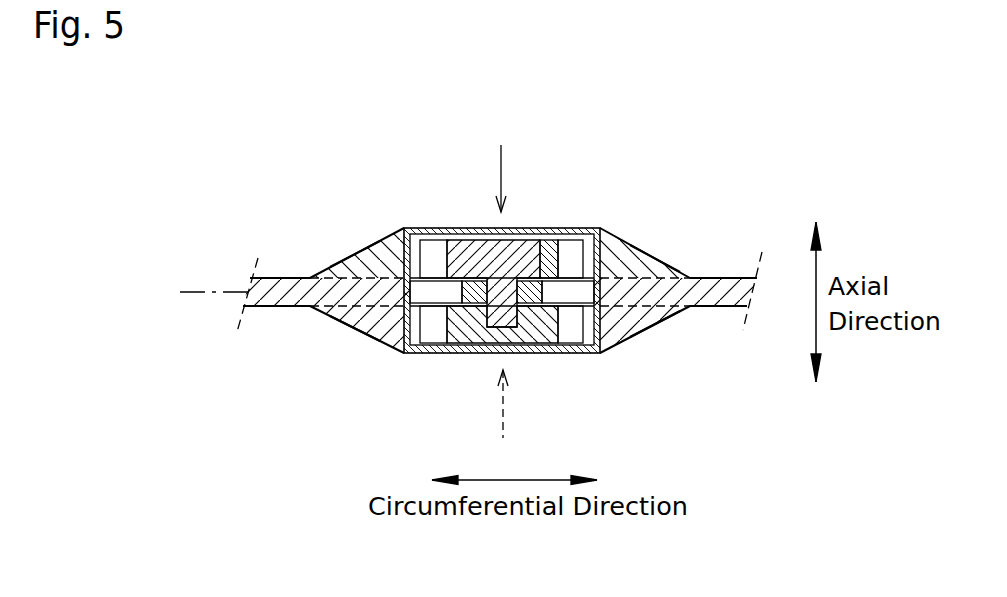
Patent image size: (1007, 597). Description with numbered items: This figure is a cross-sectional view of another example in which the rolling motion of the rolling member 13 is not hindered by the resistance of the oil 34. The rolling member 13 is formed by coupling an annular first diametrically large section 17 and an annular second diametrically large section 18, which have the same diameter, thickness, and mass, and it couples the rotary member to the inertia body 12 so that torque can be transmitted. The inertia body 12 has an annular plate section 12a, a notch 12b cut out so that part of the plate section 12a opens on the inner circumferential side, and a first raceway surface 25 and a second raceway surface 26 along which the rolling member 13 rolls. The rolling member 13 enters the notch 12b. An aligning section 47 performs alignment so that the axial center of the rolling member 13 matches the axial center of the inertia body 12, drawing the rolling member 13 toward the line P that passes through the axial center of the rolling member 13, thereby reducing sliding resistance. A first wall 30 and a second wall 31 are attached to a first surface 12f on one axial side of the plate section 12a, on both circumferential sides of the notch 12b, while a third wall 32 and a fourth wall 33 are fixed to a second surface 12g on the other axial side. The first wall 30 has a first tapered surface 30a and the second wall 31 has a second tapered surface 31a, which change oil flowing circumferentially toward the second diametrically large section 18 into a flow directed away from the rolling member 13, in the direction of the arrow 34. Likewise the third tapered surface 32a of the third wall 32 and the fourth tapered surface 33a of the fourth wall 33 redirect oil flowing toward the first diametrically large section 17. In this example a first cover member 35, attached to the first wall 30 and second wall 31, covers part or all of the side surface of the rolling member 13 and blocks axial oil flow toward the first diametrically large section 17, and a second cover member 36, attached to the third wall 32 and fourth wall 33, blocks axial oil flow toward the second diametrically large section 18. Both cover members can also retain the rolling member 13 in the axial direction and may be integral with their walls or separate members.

The inertia body 12 is at (277, 260).
The annular plate section 12a is at (280, 296).
The notch 12b is at (434, 290).
The first surface 12f is at (253, 312).
The second surface 12g is at (742, 272).
The line P is at (193, 292).
The rolling member 13 is at (502, 293).
The first diametrically large section 17 is at (512, 250).
The second diametrically large section 18 is at (528, 328).
The first raceway surface 25 is at (571, 252).
The second raceway surface 26 is at (438, 328).
The first wall 30 is at (384, 358).
The first tapered surface 30a is at (347, 328).
The second wall 31 is at (631, 355).
The second tapered surface 31a is at (662, 320).
The third wall 32 is at (358, 228).
The third tapered surface 32a is at (338, 262).
The fourth wall 33 is at (642, 227).
The fourth tapered surface 33a is at (662, 255).
The oil 34 is at (503, 160).
The first cover member 35 is at (490, 228).
The second cover member 36 is at (571, 347).
The aligning section 47 is at (543, 246).